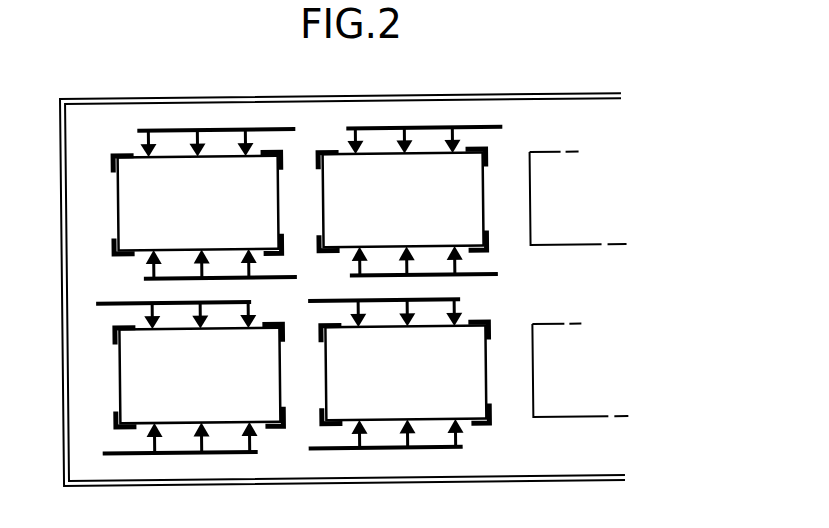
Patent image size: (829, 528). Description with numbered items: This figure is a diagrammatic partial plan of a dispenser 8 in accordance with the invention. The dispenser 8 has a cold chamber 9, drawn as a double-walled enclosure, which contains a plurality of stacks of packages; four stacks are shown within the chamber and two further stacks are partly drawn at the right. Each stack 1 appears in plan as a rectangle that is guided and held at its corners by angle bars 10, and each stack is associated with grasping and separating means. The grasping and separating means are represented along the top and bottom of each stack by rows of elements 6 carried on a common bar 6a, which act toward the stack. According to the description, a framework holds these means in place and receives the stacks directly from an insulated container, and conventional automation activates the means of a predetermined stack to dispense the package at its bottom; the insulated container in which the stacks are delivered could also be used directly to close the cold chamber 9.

The workpiece 1 is at (112, 217).
The nozzle 6 is at (148, 141).
The supply pipe 6a is at (176, 129).
The dispenser 8 is at (84, 91).
The cold chamber 9 is at (200, 99).
The angle bars 10 is at (285, 166).